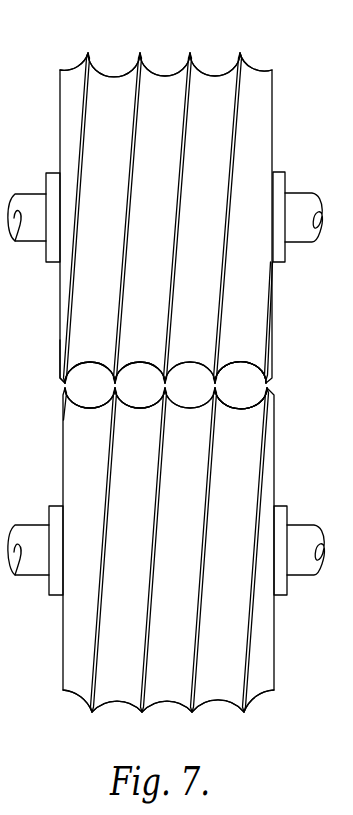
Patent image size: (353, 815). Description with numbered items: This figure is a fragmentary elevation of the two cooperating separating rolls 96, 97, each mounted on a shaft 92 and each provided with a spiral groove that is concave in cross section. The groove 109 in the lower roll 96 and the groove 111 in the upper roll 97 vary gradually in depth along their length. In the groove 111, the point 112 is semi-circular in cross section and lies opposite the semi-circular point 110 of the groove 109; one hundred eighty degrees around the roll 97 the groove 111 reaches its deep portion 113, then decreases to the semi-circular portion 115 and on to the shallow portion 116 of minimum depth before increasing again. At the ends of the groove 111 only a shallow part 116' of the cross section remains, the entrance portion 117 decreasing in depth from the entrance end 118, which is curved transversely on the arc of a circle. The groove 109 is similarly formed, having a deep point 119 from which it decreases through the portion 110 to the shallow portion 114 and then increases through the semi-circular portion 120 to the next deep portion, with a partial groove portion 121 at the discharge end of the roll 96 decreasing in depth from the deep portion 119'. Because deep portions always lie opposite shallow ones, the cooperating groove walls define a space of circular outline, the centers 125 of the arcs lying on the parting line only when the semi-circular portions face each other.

The roll 97 is at (273, 118).
The roll 96 is at (277, 662).
The shaft 92 is at (36, 242).
The groove 109 is at (238, 502).
The semi-circular in cross section point 110 is at (77, 407).
The groove 111 is at (100, 163).
The semi-circular in cross section point 112 is at (200, 366).
The deep portion 113 is at (118, 73).
The shallow portion 114 is at (108, 705).
The semi-circular in cross section portion 115 is at (136, 368).
The shallow portion 116 is at (165, 48).
The shallow part 116' is at (165, 48).
The entrance portion 117 is at (65, 285).
The entrance end 118 is at (62, 368).
The deep portion 119 is at (107, 718).
The deep portion 119' is at (280, 701).
The semi-circular in cross section portion 120 is at (133, 406).
The partial groove portion 121 is at (268, 632).
The center 125 is at (93, 385).